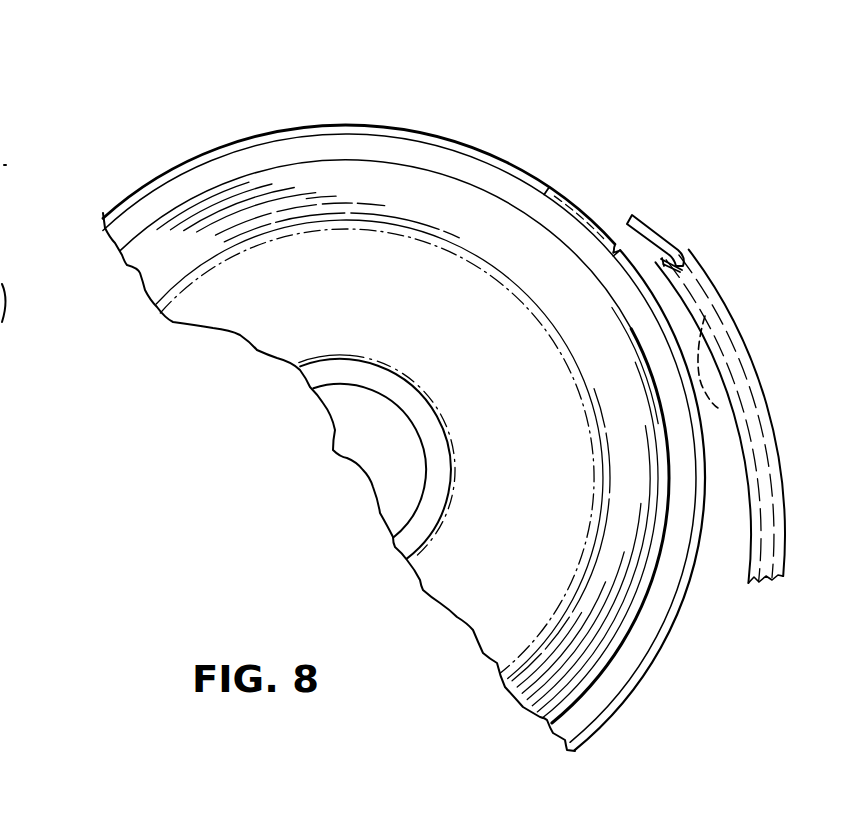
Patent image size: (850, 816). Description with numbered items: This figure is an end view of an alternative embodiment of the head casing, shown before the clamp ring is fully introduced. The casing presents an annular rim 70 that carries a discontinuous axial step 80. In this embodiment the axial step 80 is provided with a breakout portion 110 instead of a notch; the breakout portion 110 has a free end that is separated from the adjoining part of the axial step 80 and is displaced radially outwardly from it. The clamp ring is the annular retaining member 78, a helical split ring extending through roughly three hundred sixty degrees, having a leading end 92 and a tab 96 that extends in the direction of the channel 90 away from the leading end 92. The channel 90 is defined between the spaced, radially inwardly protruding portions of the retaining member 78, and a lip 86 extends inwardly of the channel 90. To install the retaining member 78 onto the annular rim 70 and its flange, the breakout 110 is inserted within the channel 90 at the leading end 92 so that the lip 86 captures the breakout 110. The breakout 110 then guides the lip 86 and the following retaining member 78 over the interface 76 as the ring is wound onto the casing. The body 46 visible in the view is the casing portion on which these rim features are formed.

The disc body 46 is at (527, 521).
The annular rim 70 is at (667, 393).
The interface 76 is at (509, 166).
The annular retaining member 78 is at (778, 438).
The discontinuous axial step 80 is at (548, 186).
The lip 86 is at (713, 372).
The channel 90 is at (712, 317).
The leading end 92 is at (684, 267).
The tab 96 is at (658, 233).
The breakout portion 110 is at (619, 240).